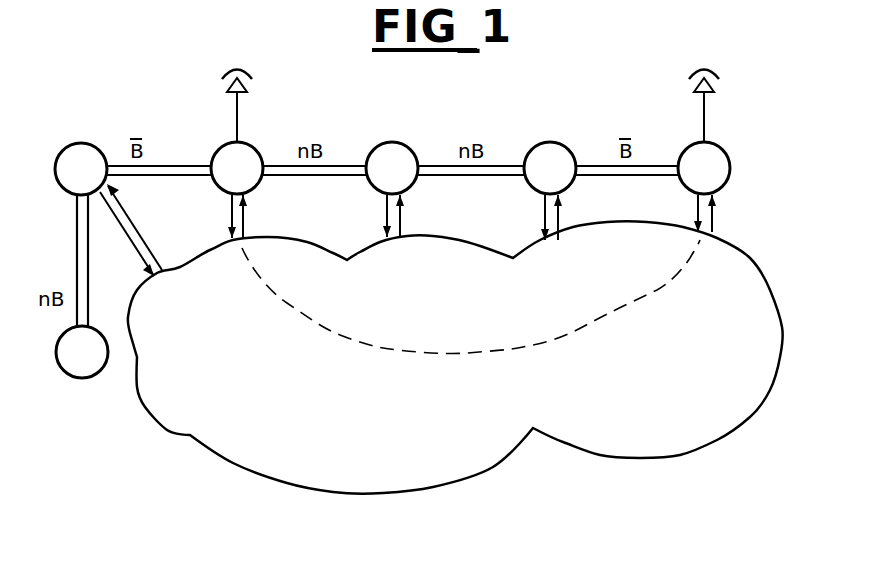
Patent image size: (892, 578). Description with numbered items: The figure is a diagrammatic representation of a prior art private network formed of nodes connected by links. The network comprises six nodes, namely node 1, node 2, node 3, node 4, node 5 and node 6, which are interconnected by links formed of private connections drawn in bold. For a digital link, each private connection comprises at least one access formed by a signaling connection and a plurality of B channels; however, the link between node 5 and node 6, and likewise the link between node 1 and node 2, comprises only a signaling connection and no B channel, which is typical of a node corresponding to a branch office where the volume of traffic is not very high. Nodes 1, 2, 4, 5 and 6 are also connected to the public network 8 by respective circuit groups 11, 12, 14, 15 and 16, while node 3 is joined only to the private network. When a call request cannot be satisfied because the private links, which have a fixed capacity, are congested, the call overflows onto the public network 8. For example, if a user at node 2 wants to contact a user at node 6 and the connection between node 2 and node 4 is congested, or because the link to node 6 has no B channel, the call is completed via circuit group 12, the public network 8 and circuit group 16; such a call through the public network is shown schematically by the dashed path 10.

The node 1 is at (81, 169).
The node 2 is at (237, 132).
The node 3 is at (82, 352).
The node 4 is at (392, 168).
The node 5 is at (550, 168).
The node 6 is at (704, 132).
The public network 8 is at (477, 450).
The call via the public network 10 is at (655, 293).
The circuit group 11 is at (118, 230).
The circuit group 12 is at (233, 215).
The circuit group 14 is at (387, 217).
The circuit group 15 is at (560, 210).
The circuit group 16 is at (715, 217).